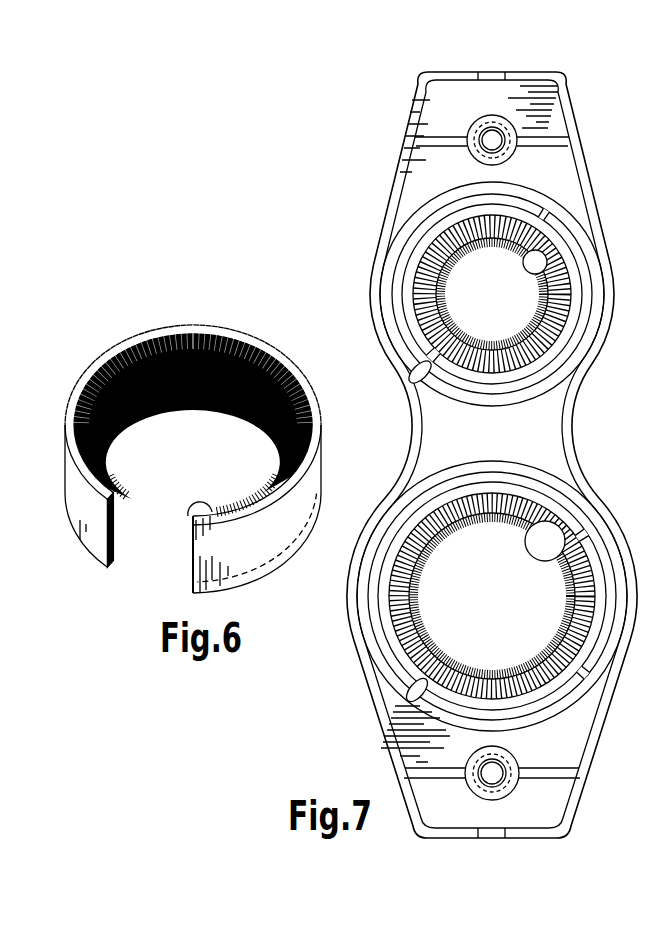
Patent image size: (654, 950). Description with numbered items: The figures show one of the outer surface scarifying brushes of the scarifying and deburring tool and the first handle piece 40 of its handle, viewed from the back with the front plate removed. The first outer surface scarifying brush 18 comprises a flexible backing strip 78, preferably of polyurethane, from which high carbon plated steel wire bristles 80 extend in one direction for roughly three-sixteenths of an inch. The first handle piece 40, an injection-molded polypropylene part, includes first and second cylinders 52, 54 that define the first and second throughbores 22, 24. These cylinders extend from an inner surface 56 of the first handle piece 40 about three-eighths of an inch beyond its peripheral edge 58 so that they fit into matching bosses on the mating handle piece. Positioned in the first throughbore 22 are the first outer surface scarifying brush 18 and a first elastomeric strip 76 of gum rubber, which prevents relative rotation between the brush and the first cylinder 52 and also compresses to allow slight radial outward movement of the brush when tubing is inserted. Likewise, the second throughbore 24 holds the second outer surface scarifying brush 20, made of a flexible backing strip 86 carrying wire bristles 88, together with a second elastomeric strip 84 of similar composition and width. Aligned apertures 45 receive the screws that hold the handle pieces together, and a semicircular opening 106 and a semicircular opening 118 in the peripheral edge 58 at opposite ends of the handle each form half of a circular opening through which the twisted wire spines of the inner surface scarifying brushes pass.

In FIG. 6, the first outer surface scarifying brush 18 is at (100, 582).
In FIG. 7, the first outer surface scarifying brush 18 is at (470, 295).
In FIG. 7, the second outer surface scarifying brush 20 is at (455, 606).
In FIG. 7, the first throughbore 22 is at (412, 378).
In FIG. 7, the second throughbore 24 is at (410, 692).
In FIG. 7, the first handle piece 40 is at (360, 251).
In FIG. 7, the apertures 45 is at (497, 148).
In FIG. 7, the first cylinder 52 is at (522, 400).
In FIG. 7, the second cylinder 54 is at (567, 492).
In FIG. 7, the inner surface 56 is at (521, 452).
In FIG. 7, the peripheral edge 58 is at (528, 80).
In FIG. 7, the first elastomeric strip 76 is at (398, 287).
In FIG. 6, the flexible backing strip 78 is at (272, 547).
In FIG. 7, the flexible backing strip 78 is at (424, 246).
In FIG. 6, the wire bristles 80 is at (187, 516).
In FIG. 7, the wire bristles 80 is at (537, 233).
In FIG. 7, the second elastomeric strip 84 is at (393, 663).
In FIG. 7, the flexible backing strip 86 is at (410, 523).
In FIG. 7, the wire bristles 88 is at (553, 560).
In FIG. 7, the semicircular opening 106 is at (488, 70).
In FIG. 7, the semicircular opening 118 is at (493, 838).